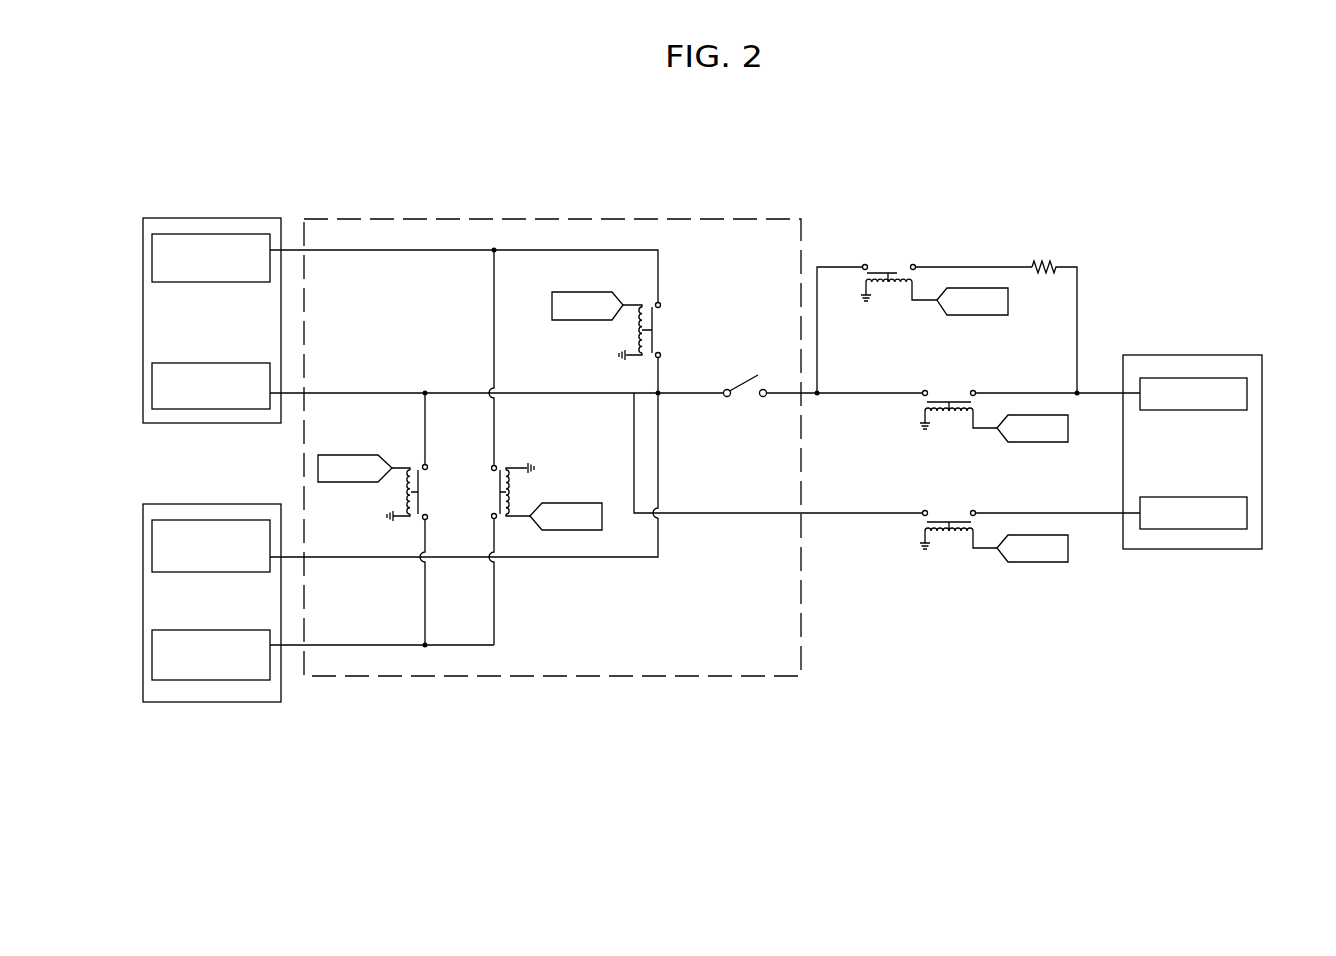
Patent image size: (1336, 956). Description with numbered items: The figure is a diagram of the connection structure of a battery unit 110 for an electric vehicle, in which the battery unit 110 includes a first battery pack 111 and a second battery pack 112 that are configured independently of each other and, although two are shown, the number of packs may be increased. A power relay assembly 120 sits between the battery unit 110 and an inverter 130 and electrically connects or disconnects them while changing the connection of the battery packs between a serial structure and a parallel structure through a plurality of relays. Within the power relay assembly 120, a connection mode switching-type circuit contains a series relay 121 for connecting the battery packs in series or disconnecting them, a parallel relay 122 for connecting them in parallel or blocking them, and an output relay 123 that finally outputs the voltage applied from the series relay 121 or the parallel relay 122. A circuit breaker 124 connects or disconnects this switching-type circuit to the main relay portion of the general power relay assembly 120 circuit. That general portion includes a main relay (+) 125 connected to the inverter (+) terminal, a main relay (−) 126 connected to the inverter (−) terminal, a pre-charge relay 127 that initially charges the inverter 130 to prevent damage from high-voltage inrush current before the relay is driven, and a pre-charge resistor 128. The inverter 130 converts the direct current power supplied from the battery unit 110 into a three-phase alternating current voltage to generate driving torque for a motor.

The battery unit 110 is at (207, 186).
The first battery pack 111 is at (200, 331).
The second battery pack 112 is at (200, 610).
The power relay assembly 120 is at (1097, 175).
The series relay 121 is at (548, 487).
The parallel relay 122 is at (358, 496).
The output relay 123 is at (590, 340).
The circuit breaker 124 is at (750, 330).
The main relay (+) 125 is at (906, 411).
The main relay (−) 126 is at (905, 532).
The pre-charge relay 127 is at (884, 310).
The pre-charge resistor 128 is at (1043, 290).
The inverter 130 is at (1192, 354).